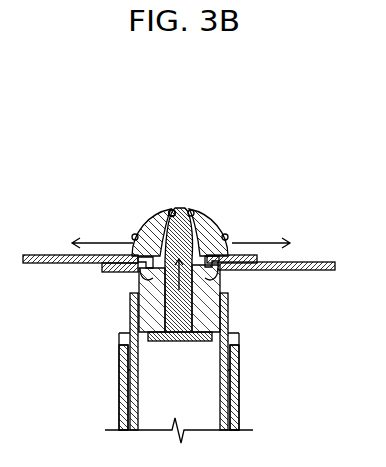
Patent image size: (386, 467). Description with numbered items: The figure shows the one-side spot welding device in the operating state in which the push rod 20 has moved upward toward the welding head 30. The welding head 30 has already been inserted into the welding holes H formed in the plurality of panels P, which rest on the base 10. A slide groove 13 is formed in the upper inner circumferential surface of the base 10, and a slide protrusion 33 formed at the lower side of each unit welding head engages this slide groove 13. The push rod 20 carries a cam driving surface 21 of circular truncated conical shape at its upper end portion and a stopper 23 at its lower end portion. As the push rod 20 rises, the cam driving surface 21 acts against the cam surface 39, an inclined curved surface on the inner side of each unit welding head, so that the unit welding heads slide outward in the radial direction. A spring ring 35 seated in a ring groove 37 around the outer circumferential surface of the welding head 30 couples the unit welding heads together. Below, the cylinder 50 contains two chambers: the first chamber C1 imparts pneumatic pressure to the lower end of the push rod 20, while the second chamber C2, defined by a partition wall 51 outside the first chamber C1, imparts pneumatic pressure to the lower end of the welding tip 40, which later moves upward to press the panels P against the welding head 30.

The base 10 is at (205, 285).
The slide groove 13 is at (138, 273).
The push rod 20 is at (186, 305).
The cam driving surface 21 is at (203, 213).
The stopper 23 is at (147, 340).
The welding head 30 is at (212, 226).
The slide protrusion 33 is at (150, 268).
The spring ring 35 is at (226, 237).
The ring groove 37 is at (135, 237).
The cam surface 39 is at (172, 213).
The welding tip 40 is at (136, 318).
The cylinder 50 is at (233, 350).
The partition wall 51 is at (215, 415).
The panel P is at (318, 262).
The welding hole H is at (218, 276).
The first chamber C1 is at (192, 391).
The second chamber C2 is at (225, 395).